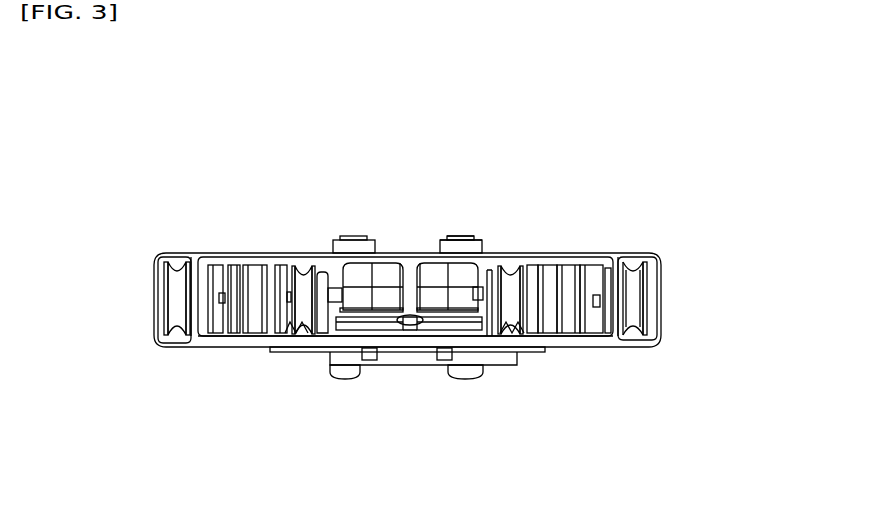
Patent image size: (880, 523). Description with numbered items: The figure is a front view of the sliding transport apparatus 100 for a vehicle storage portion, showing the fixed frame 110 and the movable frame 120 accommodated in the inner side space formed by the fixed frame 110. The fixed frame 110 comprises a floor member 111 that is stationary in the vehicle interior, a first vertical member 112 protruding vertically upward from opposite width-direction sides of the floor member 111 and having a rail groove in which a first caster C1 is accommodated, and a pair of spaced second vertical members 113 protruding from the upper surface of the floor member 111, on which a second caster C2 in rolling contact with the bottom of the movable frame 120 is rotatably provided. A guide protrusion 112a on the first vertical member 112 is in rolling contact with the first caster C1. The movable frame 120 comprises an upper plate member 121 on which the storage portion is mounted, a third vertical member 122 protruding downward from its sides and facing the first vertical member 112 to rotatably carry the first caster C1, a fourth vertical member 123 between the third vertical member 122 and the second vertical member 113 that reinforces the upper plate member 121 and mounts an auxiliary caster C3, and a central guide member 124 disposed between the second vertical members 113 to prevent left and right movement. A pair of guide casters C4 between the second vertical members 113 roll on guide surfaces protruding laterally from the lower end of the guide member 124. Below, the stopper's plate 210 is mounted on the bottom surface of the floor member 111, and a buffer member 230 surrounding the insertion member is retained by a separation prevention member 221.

The sliding transport apparatus 100 is at (507, 134).
The fixed frame 110 is at (283, 437).
The floor member 111 is at (225, 340).
The first vertical member 112 is at (160, 303).
The guide protrusion 112a is at (630, 262).
The second vertical member 113 is at (295, 333).
The movable frame 120 is at (365, 173).
The upper plate member 121 is at (390, 257).
The third vertical member 122 is at (203, 290).
The fourth vertical member 123 is at (273, 287).
The guide member 124 is at (407, 288).
The plate 210 is at (502, 358).
The separation prevention member 221 is at (478, 233).
The buffer member 230 is at (453, 278).
The first caster C1 is at (637, 303).
The second caster C2 is at (512, 283).
The auxiliary caster C3 is at (588, 273).
The guide caster C4 is at (433, 323).